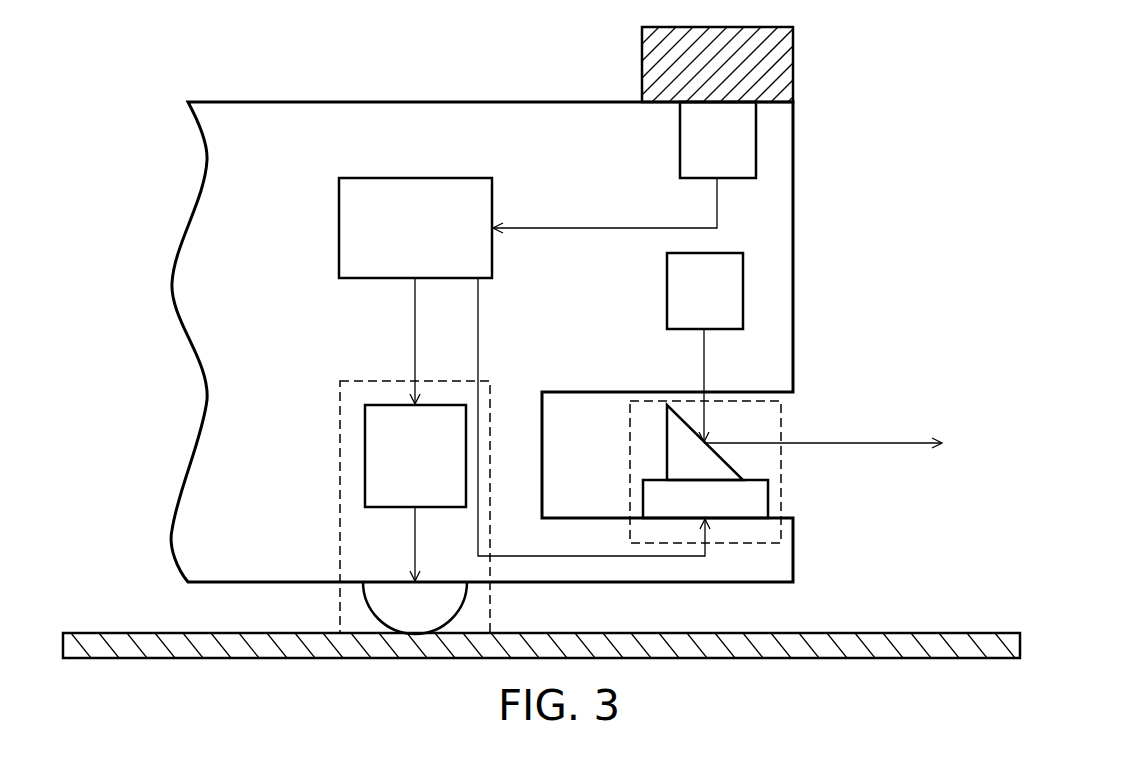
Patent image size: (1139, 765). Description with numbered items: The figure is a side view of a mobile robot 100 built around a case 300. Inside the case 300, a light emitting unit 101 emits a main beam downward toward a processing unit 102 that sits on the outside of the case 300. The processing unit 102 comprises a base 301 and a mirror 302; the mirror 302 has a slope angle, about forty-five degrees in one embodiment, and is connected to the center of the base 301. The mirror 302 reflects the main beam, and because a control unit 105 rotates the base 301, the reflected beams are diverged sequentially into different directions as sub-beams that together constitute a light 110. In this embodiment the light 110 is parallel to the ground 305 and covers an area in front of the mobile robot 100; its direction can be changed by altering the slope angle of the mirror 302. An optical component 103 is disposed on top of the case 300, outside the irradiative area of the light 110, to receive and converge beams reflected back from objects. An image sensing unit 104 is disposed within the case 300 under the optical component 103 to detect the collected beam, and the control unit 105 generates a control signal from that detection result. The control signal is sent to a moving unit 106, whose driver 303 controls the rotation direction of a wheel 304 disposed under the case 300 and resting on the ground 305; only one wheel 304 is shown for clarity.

The mobile robot 100 is at (972, 101).
The case 300 is at (472, 102).
The optical component 103 is at (793, 66).
The image sensing unit 104 is at (699, 151).
The control unit 105 is at (397, 256).
The light emitting unit 101 is at (686, 302).
The mirror 302 is at (674, 472).
The base 301 is at (686, 511).
The processing unit 102 is at (743, 543).
The light 110 is at (857, 443).
The moving unit 106 is at (340, 478).
The driver 303 is at (397, 467).
The wheel 304 is at (378, 603).
The ground 305 is at (1022, 645).